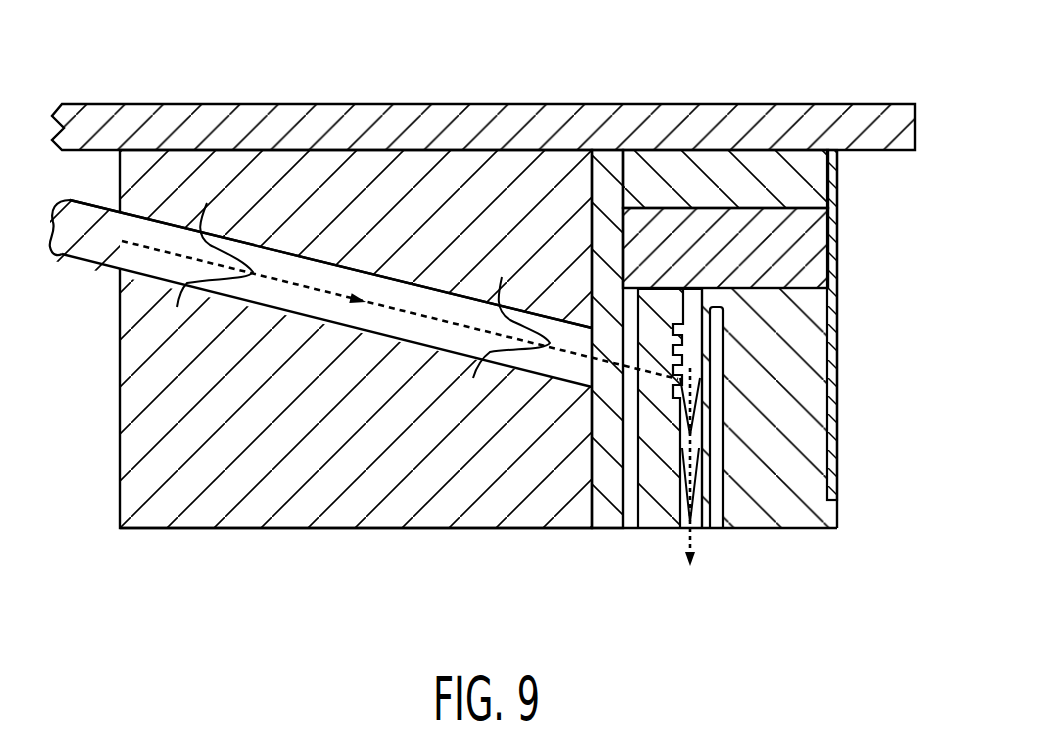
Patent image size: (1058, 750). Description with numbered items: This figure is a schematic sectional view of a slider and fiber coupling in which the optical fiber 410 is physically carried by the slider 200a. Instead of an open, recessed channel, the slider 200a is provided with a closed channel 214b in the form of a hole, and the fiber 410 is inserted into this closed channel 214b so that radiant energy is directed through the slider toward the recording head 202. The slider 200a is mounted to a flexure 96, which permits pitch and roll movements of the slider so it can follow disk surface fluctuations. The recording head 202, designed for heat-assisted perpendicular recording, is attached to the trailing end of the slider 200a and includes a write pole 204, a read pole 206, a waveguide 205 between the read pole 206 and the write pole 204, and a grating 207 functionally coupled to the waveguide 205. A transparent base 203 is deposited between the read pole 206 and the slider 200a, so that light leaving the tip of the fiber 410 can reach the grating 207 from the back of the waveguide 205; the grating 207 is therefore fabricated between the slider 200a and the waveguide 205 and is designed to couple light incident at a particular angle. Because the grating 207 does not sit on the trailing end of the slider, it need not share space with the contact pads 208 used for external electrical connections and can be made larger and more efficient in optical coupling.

The flexure 96 is at (880, 128).
The slider 200a is at (300, 515).
The recording head 202 is at (783, 405).
The transparent base 203 is at (608, 518).
The write pole 204 is at (716, 534).
The waveguide 205 is at (702, 535).
The read pole 206 is at (631, 533).
The grating 207 is at (665, 342).
The contact pads 208 is at (836, 236).
The closed channel 214b is at (152, 215).
The optical fiber 410 is at (92, 238).